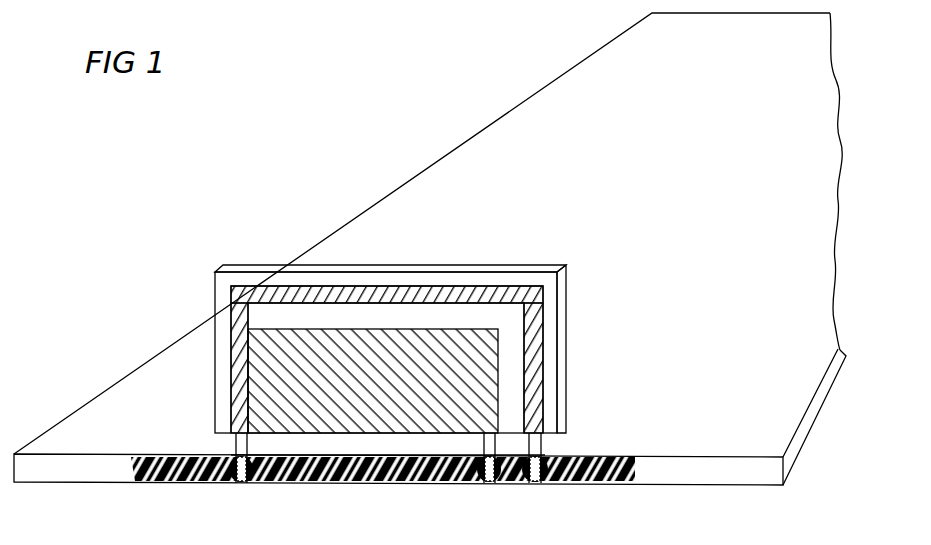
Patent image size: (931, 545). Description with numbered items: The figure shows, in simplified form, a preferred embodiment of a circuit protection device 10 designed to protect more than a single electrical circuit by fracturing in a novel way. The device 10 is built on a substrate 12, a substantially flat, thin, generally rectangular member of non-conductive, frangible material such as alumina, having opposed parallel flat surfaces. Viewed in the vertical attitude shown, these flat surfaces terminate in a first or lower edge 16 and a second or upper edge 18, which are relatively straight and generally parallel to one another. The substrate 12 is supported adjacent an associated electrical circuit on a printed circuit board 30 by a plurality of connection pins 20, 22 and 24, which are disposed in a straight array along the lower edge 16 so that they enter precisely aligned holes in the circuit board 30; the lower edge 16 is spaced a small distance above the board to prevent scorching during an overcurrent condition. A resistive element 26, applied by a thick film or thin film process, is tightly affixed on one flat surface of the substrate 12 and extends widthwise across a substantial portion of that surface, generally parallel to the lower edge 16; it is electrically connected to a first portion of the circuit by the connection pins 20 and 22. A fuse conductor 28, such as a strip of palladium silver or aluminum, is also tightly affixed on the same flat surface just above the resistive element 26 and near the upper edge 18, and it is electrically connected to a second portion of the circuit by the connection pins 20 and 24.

The circuit protection device 10 is at (430, 368).
The substrate 12 is at (551, 373).
The first edge 16 is at (399, 435).
The second edge 18 is at (404, 270).
The connection pin 20 is at (235, 485).
The connection pin 22 is at (487, 484).
The connection pin 24 is at (542, 484).
The resistive element 26 is at (278, 346).
The fuse conductor 28 is at (497, 295).
The printed circuit board 30 is at (112, 470).